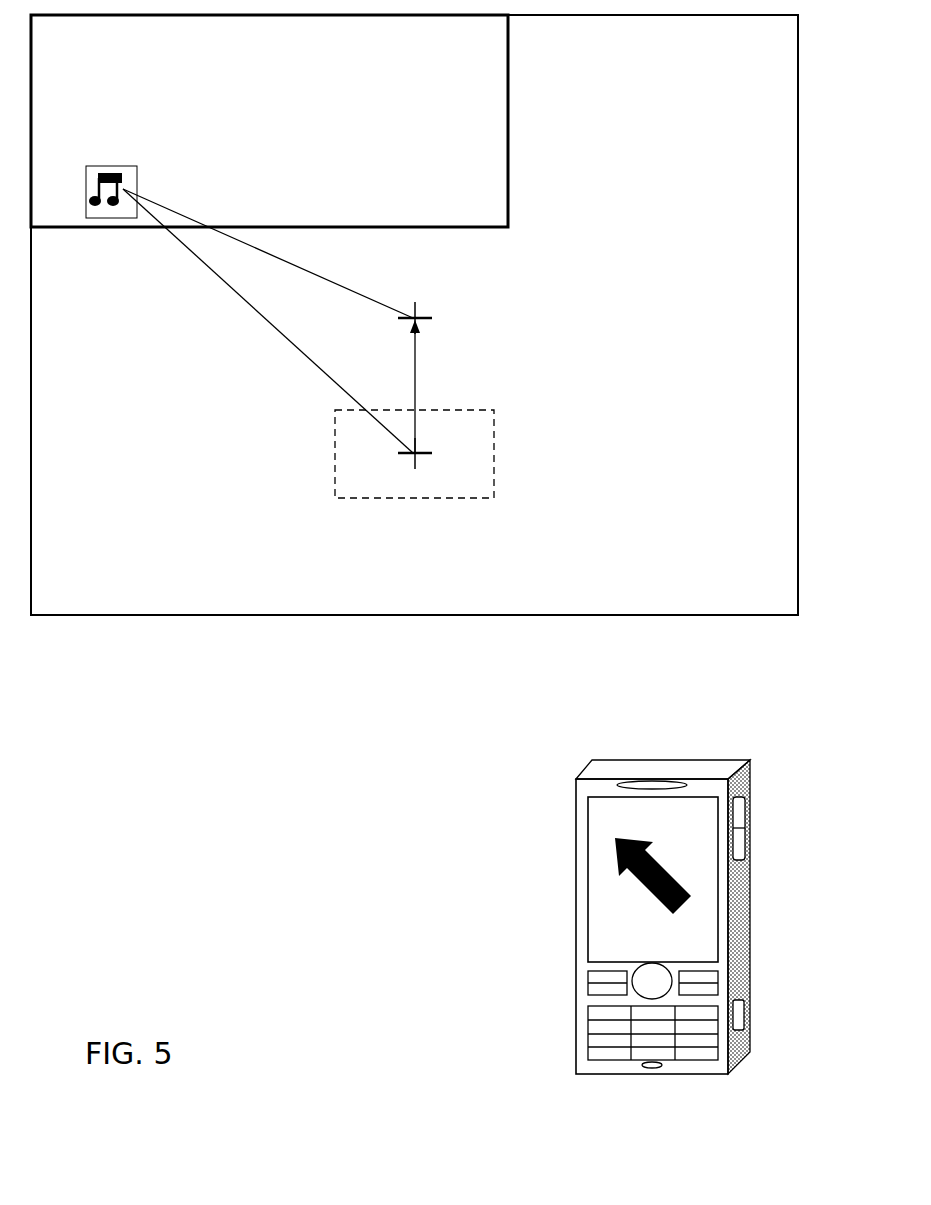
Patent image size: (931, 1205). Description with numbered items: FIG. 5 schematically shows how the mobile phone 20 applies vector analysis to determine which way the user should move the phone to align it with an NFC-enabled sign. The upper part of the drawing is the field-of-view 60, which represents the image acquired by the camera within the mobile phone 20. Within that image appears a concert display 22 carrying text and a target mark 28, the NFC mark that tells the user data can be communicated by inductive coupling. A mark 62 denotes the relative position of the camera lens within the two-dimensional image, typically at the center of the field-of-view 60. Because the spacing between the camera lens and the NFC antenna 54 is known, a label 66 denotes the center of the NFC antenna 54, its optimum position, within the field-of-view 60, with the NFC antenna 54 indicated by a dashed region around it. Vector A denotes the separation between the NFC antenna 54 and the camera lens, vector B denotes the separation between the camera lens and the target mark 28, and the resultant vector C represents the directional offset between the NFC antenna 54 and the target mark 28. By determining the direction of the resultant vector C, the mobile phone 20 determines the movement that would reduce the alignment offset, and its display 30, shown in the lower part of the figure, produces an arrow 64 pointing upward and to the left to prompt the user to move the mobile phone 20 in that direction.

The mobile phone 20 is at (508, 894).
The display 22 is at (325, 121).
The target mark 28 is at (93, 221).
The display 30 is at (593, 885).
The NFC antenna 54 is at (433, 484).
The field-of-view 60 is at (414, 346).
The mark 62 is at (483, 304).
The arrow 64 is at (580, 860).
The label 66 is at (486, 427).
The vector A is at (454, 386).
The vector B is at (268, 253).
The resultant vector C is at (268, 321).